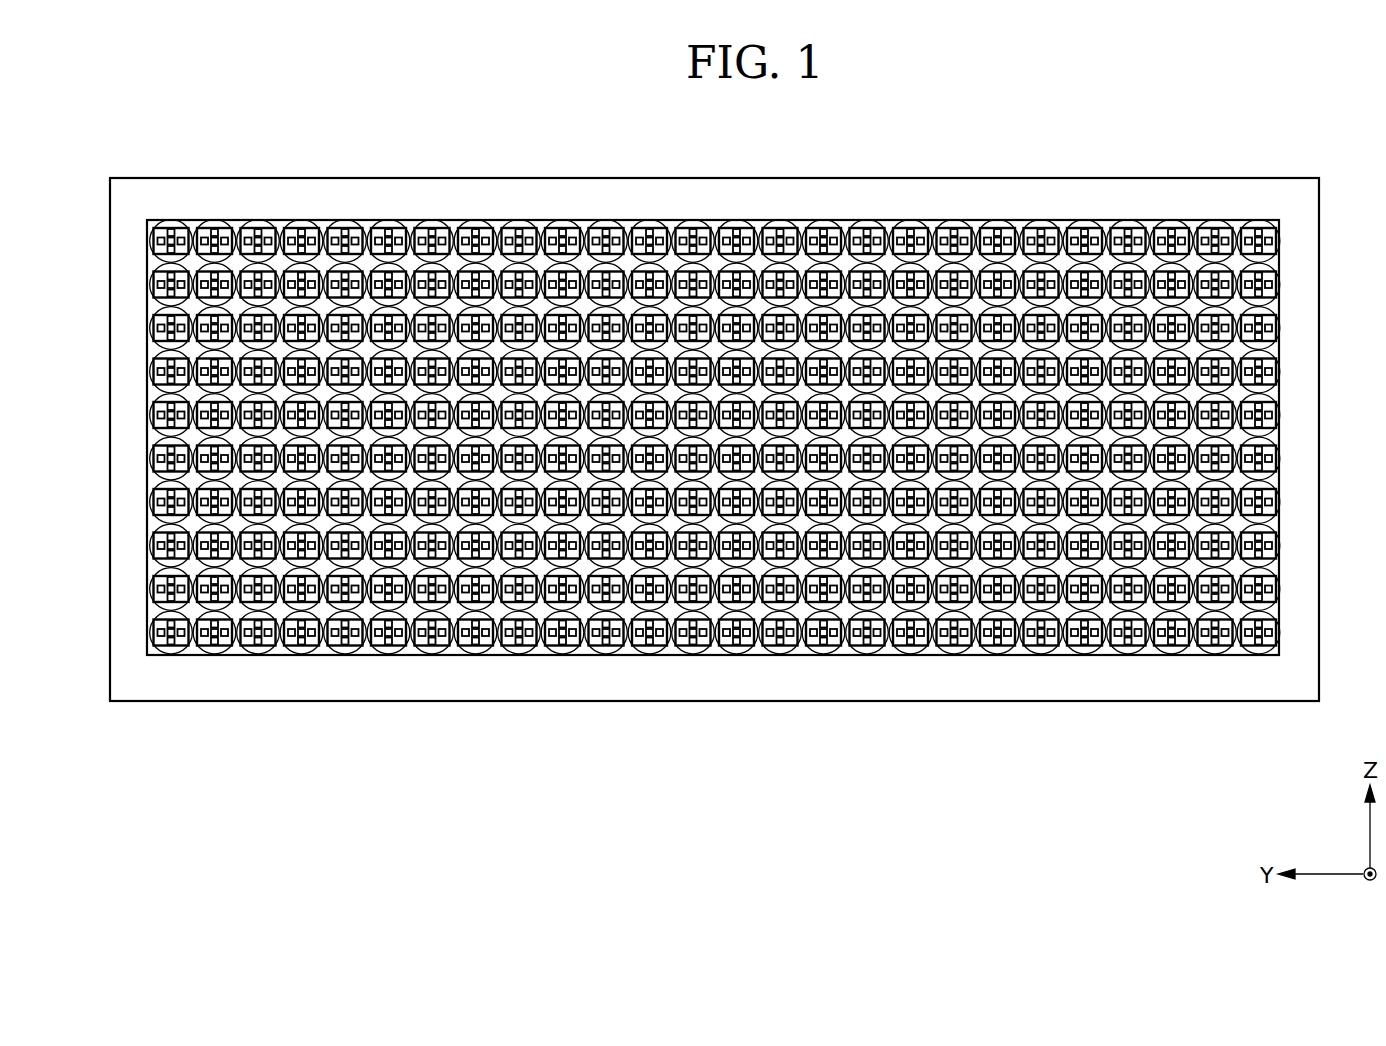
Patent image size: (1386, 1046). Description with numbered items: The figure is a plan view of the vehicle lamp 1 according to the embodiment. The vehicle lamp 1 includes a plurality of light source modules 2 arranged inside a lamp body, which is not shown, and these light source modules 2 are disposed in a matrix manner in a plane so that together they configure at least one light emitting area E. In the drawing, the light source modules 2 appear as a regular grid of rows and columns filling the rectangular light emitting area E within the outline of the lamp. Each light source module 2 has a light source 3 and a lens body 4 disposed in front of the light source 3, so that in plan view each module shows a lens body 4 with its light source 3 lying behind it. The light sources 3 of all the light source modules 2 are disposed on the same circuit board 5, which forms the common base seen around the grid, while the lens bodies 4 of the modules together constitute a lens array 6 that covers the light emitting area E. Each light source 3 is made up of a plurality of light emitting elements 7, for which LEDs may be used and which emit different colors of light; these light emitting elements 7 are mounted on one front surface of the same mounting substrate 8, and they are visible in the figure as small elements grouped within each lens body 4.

The vehicle lamp 1 is at (108, 136).
The circuit board 5 is at (688, 183).
The light emitting area E is at (520, 668).
The light source module 2 is at (869, 658).
The lens body 4 is at (917, 643).
The mounting substrate 8 is at (907, 638).
The light emitting element 7 is at (902, 640).
The light source 3 is at (886, 733).
The lens array 6 is at (1050, 645).